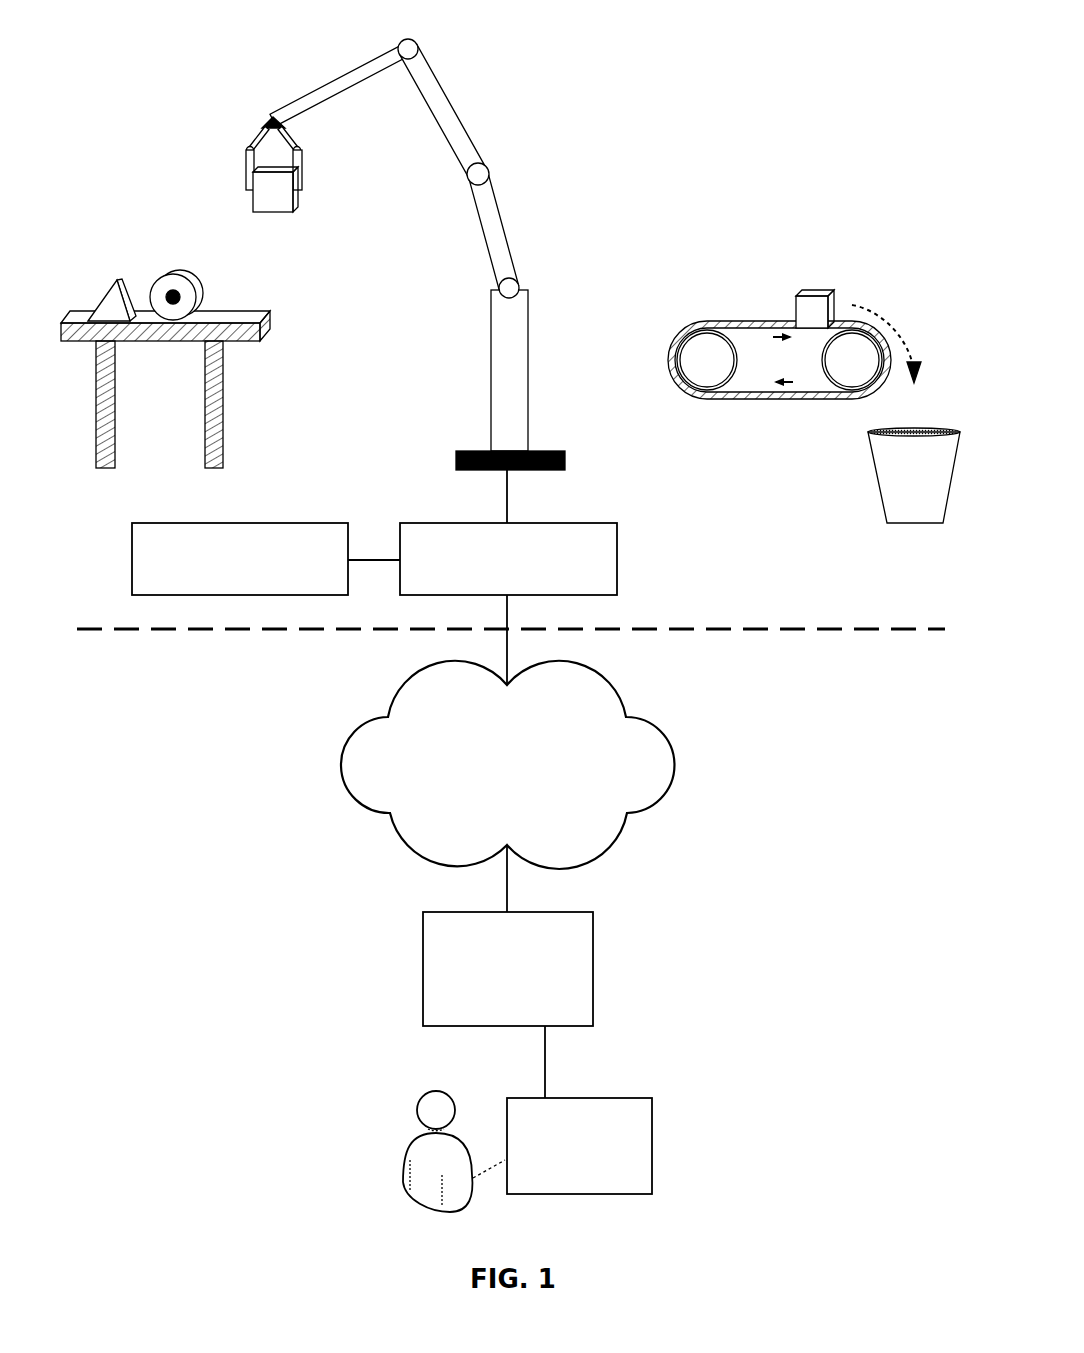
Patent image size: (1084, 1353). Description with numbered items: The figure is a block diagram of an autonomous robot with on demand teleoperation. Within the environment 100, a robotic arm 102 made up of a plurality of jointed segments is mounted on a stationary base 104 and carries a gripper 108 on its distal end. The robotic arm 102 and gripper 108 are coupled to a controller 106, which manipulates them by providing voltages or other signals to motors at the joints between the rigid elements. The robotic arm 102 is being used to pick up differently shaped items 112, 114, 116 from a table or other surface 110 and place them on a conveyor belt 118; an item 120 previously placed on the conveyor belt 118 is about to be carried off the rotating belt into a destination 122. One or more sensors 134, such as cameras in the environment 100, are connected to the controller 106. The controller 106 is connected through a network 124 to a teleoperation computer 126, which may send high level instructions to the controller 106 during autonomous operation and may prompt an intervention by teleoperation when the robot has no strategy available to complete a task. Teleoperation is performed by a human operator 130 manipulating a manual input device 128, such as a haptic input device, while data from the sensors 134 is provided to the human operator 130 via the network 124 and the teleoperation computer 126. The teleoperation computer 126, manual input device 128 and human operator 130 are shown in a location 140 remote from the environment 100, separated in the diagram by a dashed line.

The environment 100 is at (146, 52).
The robotic arm 102 is at (512, 224).
The stationary base 104 is at (552, 451).
The controller 106 is at (617, 553).
The gripper 108 is at (244, 165).
The table or other surface 110 is at (280, 322).
The item 112 is at (275, 213).
The item 114 is at (100, 305).
The item 116 is at (175, 275).
The conveyor belt 118 is at (724, 322).
The item 120 is at (812, 290).
The destination 122 is at (870, 473).
The network 124 is at (678, 752).
The teleoperation computer 126 is at (593, 967).
The manual input device 128 is at (652, 1145).
The human operator 130 is at (402, 1165).
The sensors 134 is at (132, 560).
The location 140 is at (178, 732).